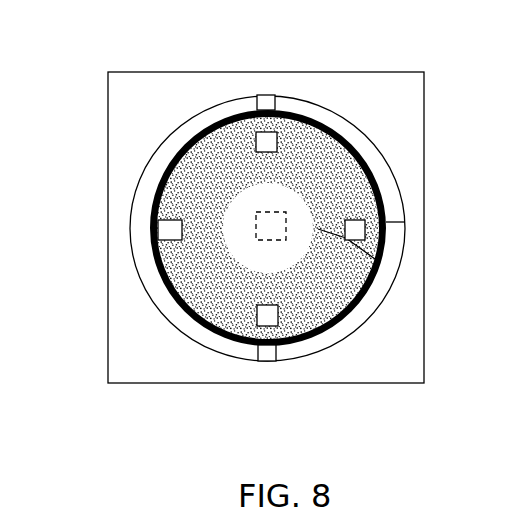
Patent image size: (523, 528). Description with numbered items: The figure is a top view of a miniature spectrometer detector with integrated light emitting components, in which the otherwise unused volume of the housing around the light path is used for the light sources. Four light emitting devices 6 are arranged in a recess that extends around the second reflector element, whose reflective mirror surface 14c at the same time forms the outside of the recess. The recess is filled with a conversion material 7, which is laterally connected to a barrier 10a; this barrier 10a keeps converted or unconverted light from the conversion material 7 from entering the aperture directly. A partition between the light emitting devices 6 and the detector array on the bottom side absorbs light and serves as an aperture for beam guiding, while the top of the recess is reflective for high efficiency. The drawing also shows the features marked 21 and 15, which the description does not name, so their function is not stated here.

The barrier 10a is at (209, 119).
The reflective mirror surface 14c is at (223, 227).
The annular groove 21 is at (290, 109).
The light emitting devices 6 is at (283, 139).
The conversion material 7 is at (350, 178).
The terminal 15 is at (375, 259).